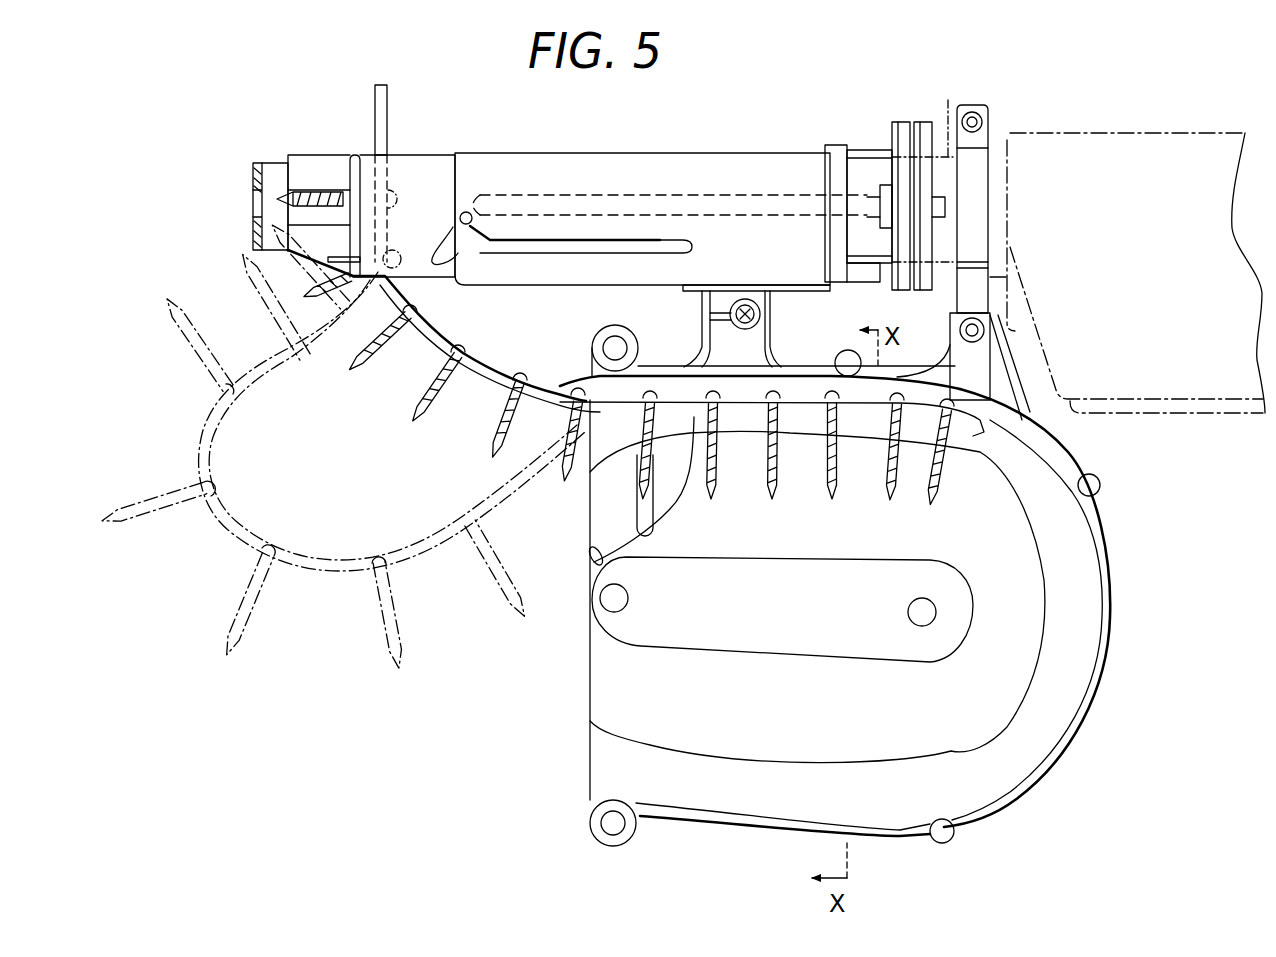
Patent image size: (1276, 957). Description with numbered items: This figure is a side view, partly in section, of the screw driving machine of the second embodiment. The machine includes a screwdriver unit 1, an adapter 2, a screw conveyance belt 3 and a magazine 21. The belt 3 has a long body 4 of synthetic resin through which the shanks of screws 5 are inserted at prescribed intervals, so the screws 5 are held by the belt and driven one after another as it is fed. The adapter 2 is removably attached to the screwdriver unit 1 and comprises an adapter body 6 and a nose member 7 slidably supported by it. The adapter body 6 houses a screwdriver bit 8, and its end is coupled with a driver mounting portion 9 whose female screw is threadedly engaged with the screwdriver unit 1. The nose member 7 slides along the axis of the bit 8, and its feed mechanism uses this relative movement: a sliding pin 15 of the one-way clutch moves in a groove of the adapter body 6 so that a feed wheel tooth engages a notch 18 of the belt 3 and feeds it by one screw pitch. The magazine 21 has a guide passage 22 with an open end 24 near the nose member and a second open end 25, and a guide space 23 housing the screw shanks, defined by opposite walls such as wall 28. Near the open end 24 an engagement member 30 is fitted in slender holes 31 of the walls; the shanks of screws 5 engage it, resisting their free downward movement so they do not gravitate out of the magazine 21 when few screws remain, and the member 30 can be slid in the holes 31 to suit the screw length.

The screwdriver unit 1 is at (1107, 132).
The adapter 2 is at (755, 151).
The screw conveyance belt 3 is at (499, 389).
The long body 4 is at (443, 340).
The screws 5 is at (430, 393).
The adapter body 6 is at (828, 150).
The nose member 7 is at (412, 158).
The screwdriver bit 8 is at (655, 193).
The driver mounting portion 9 is at (926, 184).
The sliding pin 15 is at (466, 212).
The notch 18 is at (486, 355).
The magazine 21 is at (700, 820).
The guide passage 22 is at (607, 575).
The guide space 23 is at (778, 530).
The open end 24 is at (596, 436).
The second open end 25 is at (603, 764).
The wall 28 is at (941, 592).
The engagement member 30 is at (640, 458).
The slender holes 31 is at (592, 552).